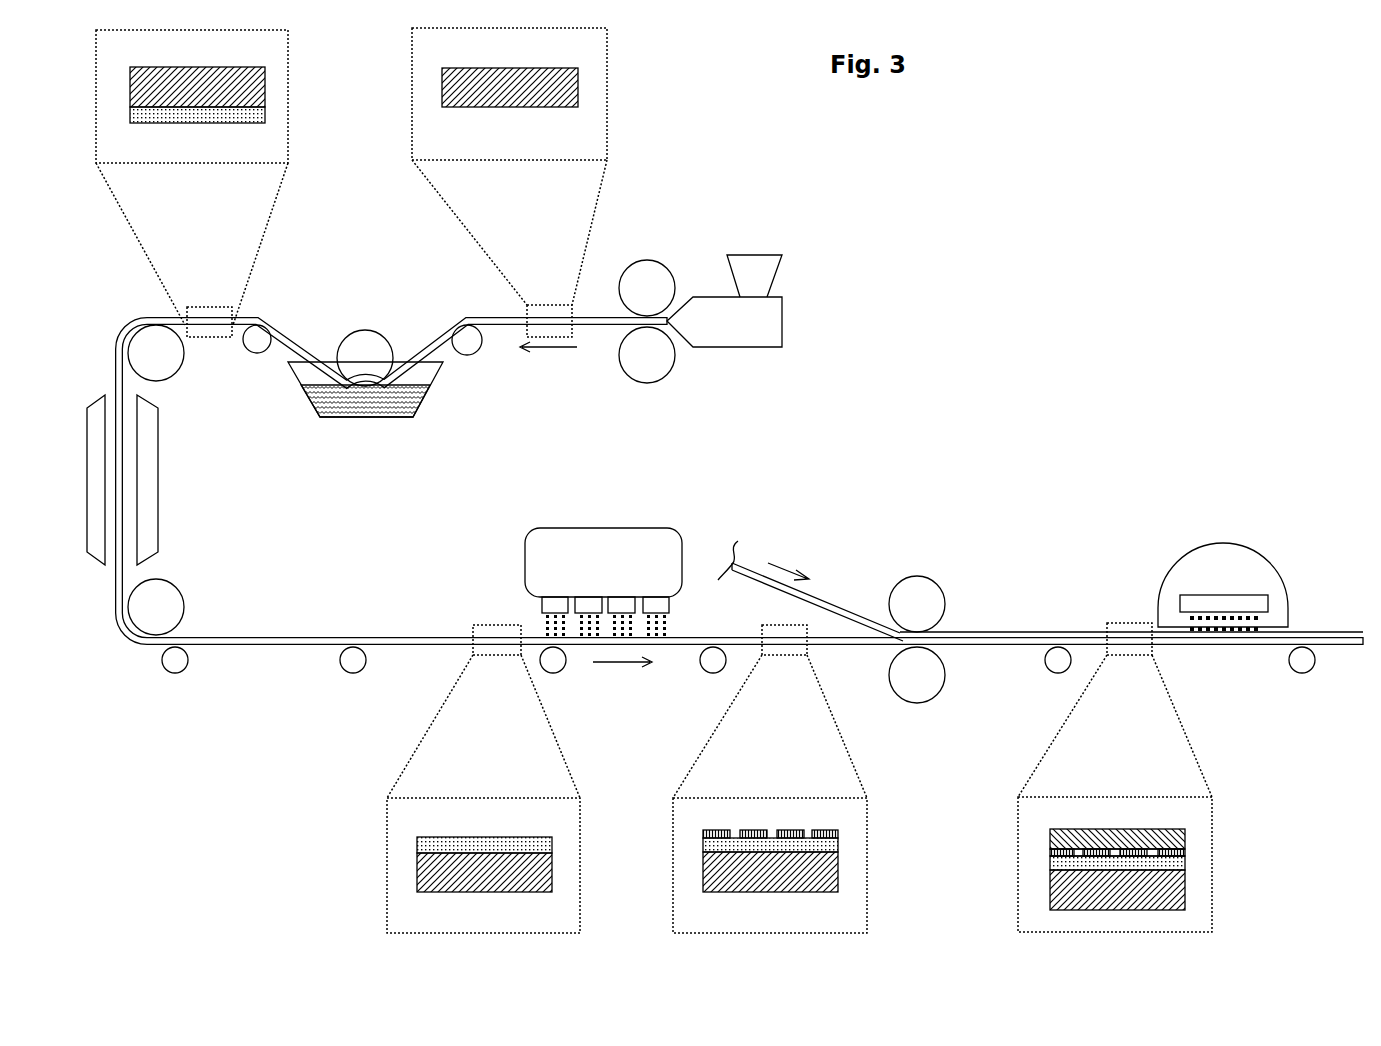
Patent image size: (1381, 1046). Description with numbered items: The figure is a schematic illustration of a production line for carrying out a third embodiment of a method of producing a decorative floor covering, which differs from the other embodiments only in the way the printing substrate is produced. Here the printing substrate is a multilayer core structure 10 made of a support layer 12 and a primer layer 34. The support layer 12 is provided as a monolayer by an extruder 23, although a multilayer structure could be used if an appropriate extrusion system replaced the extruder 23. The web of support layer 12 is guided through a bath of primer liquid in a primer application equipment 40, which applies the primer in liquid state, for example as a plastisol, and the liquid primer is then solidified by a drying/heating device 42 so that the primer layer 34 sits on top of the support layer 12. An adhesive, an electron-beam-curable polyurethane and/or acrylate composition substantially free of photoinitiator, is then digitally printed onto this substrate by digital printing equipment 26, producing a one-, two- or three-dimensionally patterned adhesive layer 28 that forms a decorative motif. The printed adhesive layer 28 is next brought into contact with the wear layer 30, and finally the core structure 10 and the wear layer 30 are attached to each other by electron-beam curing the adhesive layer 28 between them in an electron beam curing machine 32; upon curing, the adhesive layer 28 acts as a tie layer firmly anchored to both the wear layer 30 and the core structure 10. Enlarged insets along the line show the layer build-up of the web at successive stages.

The core structure 10 is at (402, 830).
The support layer 12 is at (265, 88).
The extruder 23 is at (727, 347).
The digital printing equipment 26 is at (643, 528).
The adhesive layer 28 is at (838, 834).
The wear layer 30 is at (828, 598).
The electron beam curing machine 32 is at (1142, 576).
The primer layer 34 is at (265, 118).
The primer application equipment 40 is at (446, 415).
The drying/heating device 42 is at (184, 479).